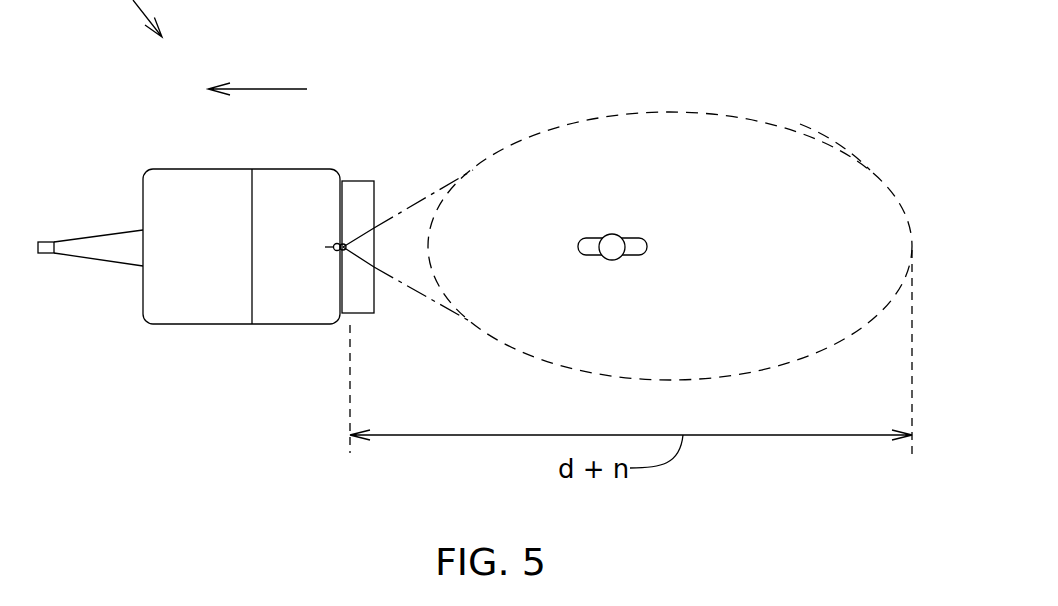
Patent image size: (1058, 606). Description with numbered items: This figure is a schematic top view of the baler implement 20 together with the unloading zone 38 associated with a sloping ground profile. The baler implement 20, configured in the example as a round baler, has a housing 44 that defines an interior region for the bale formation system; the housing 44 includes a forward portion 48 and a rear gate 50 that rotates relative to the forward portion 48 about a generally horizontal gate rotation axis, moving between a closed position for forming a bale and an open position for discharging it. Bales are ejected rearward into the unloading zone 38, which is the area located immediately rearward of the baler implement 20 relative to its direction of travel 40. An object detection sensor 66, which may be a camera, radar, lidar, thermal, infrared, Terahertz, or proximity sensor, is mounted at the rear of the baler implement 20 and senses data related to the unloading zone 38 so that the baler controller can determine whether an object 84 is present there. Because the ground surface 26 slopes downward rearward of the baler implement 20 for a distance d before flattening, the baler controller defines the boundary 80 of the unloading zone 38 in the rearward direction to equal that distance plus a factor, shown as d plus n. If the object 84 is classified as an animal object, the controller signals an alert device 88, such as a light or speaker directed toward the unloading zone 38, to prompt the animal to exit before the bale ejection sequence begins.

The baler implement 20 is at (93, 2).
The ground surface 26 is at (676, 350).
The unloading zone 38 is at (667, 117).
The direction of travel 40 is at (258, 88).
The housing 44 is at (143, 285).
The forward portion 48 is at (180, 325).
The rear gate 50 is at (288, 327).
The object detection sensor 66 is at (344, 245).
The boundary 80 is at (853, 156).
The object 84 is at (592, 245).
The alert device 88 is at (337, 245).